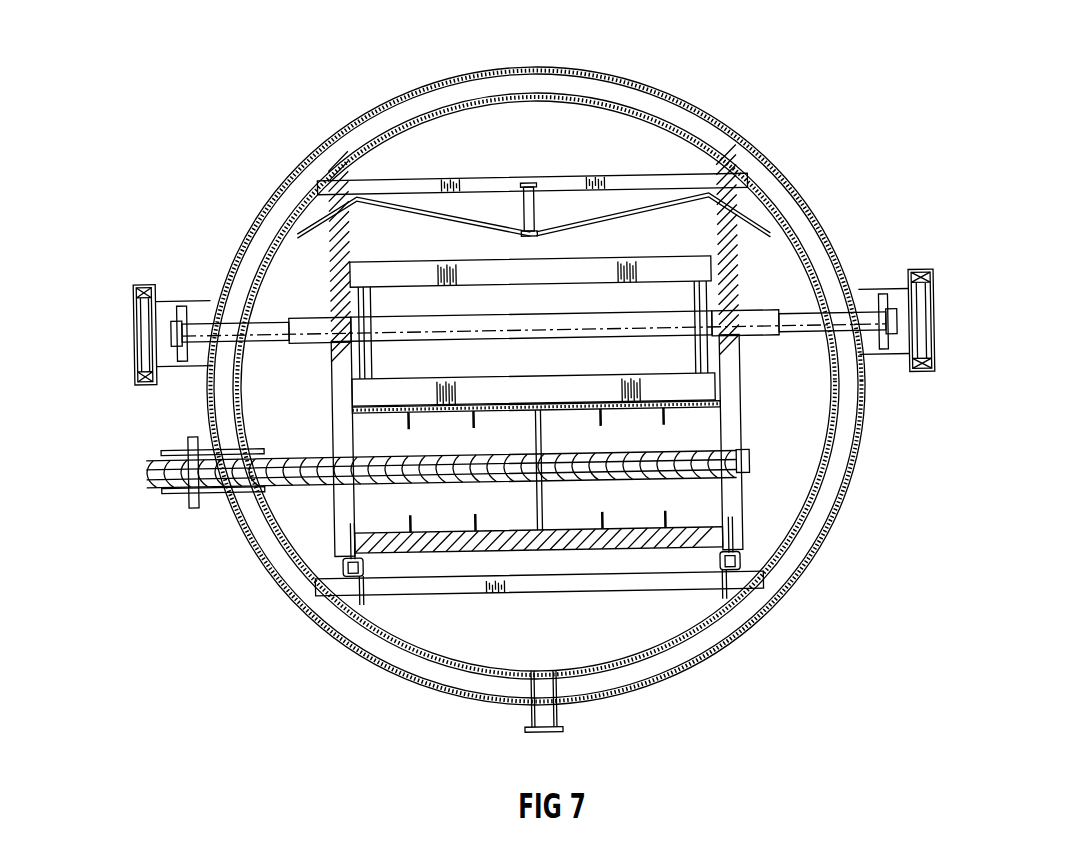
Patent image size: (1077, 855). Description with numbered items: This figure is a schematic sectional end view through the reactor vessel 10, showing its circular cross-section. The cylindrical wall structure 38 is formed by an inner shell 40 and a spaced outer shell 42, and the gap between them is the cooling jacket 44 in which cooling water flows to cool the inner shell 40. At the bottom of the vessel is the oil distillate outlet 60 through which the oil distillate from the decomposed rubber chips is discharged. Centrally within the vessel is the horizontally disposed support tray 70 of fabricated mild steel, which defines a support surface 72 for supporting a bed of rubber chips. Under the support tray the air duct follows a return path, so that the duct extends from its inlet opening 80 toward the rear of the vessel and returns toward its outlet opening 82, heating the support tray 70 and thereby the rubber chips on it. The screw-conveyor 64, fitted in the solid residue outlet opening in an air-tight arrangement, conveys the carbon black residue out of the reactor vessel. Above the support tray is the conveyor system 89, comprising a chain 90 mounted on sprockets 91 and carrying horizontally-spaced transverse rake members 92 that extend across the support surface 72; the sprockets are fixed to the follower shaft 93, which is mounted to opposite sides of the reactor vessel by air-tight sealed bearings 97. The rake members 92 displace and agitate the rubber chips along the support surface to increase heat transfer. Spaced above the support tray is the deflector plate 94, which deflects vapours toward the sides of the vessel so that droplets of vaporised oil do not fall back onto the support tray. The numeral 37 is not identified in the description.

The reactor vessel 10 is at (632, 76).
The left shaft flange 37 is at (140, 298).
The cylindrical wall structure 38 is at (740, 132).
The inner shell 40 is at (807, 248).
The outer shell 42 is at (780, 170).
The cooling jacket 44 is at (413, 111).
The oil distillate outlet 60 is at (548, 721).
The screw-conveyor 64 is at (316, 480).
The support tray 70 is at (693, 408).
The support surface 72 is at (488, 403).
The inlet opening 80 is at (435, 505).
The outlet opening 82 is at (687, 490).
The conveyor system 89 is at (564, 312).
The chain 90 is at (521, 328).
The sprockets 91 is at (365, 302).
The rake members 92 is at (707, 265).
The follower shaft 93 is at (313, 322).
The deflector plate 94 is at (617, 212).
The air-tight sealed bearings 97 is at (928, 270).